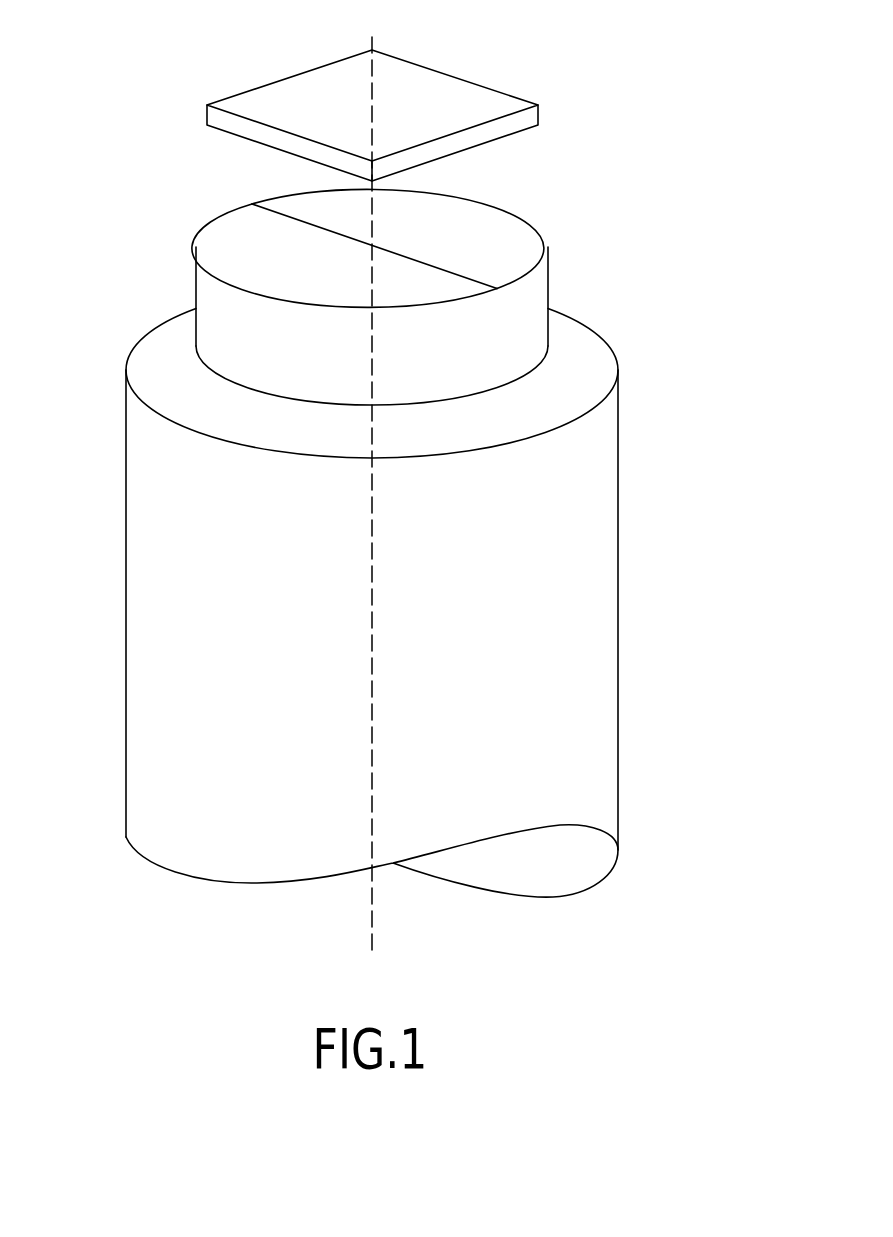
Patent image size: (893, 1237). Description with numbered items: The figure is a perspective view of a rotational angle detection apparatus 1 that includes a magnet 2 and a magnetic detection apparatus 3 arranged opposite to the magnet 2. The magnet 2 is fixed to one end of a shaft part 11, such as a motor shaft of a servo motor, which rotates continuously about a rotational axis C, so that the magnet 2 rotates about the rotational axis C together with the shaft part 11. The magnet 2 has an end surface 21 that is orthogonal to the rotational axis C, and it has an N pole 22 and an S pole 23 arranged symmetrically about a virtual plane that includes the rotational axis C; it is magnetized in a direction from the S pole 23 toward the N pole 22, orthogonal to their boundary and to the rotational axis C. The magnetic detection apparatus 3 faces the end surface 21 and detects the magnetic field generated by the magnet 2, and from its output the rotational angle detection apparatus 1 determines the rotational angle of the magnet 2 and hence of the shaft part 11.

The rotational angle detection apparatus 1 is at (728, 94).
The magnet 2 is at (553, 302).
The magnetic detection apparatus 3 is at (540, 108).
The shaft part 11 is at (618, 638).
The end surface 21 is at (257, 232).
The N pole 22 is at (243, 260).
The S pole 23 is at (500, 233).
The rotational axis C is at (373, 40).